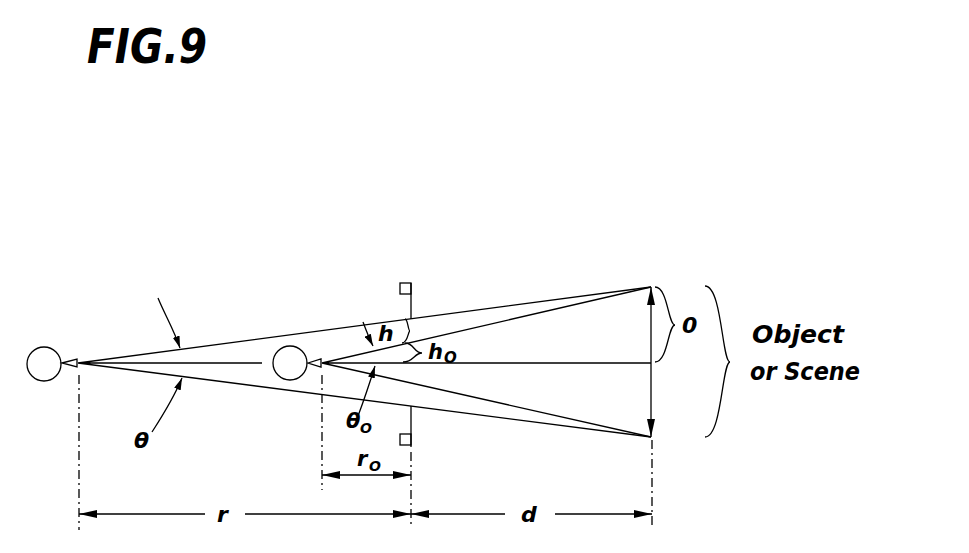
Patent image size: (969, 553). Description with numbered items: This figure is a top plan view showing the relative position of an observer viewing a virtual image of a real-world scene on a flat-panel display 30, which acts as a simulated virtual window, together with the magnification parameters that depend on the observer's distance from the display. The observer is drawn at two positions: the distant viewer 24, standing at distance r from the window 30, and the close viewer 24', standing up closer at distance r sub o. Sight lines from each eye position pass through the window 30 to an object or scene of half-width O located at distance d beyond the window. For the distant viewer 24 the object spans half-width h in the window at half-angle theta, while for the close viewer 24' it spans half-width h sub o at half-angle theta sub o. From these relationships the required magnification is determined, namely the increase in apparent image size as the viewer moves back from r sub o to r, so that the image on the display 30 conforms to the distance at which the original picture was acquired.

The viewer at the distant position 24 is at (47, 326).
The viewer at the close position 24' is at (301, 320).
The flat-panel display 30 is at (411, 303).